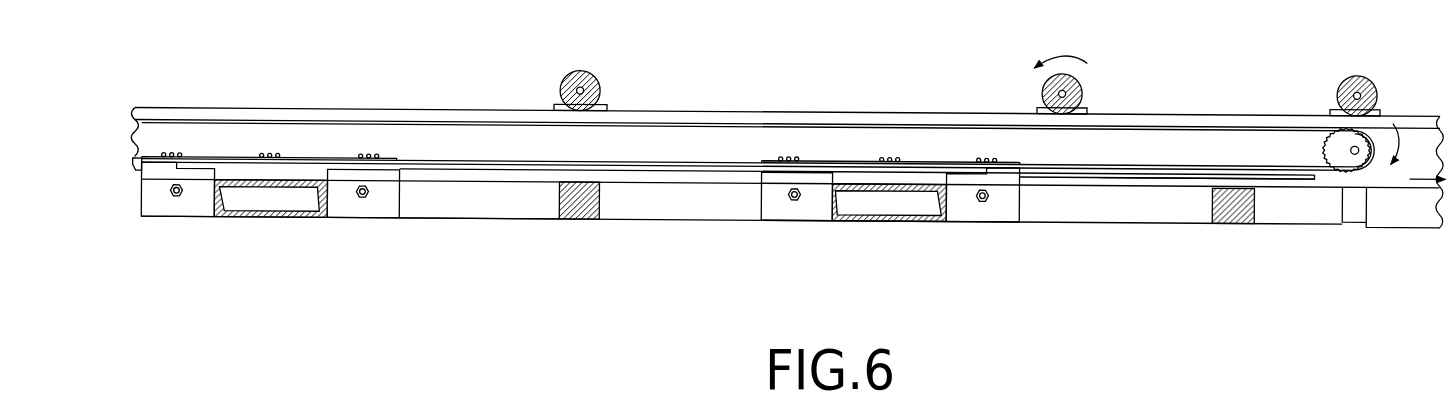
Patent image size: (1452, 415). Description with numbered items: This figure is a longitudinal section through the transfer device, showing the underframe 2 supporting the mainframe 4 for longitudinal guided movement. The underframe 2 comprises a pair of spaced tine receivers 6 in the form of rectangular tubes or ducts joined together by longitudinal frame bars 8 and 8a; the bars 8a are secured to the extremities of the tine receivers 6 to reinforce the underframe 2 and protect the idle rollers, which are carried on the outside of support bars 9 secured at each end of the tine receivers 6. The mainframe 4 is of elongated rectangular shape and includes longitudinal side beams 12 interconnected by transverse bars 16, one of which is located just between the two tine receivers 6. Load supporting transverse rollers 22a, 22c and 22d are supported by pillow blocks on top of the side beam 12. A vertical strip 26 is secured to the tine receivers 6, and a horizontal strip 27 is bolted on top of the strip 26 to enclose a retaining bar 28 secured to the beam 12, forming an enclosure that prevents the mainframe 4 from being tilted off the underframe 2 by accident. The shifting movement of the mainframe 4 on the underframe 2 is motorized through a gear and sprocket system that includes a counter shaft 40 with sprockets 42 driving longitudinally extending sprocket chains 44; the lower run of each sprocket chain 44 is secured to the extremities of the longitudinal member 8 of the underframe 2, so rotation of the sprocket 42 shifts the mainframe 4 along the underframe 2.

The underframe 2 is at (790, 248).
The mainframe 4 is at (406, 104).
The tine receiver 6 is at (320, 202).
The longitudinal frame bar 8 is at (662, 169).
The longitudinal frame bar 8a is at (457, 216).
The support bar 9 is at (808, 213).
The longitudinal side beam 12 is at (962, 107).
The transverse bar 16 is at (560, 200).
The load supporting transverse roller 22a is at (1373, 87).
The load supporting transverse roller 22c is at (1080, 91).
The load supporting transverse roller 22d is at (598, 82).
The vertical strip 26 is at (772, 174).
The horizontal strip 27 is at (850, 155).
The retaining bar 28 is at (1172, 170).
The counter shaft 40 is at (1347, 160).
The sprocket 42 is at (1337, 140).
The sprocket chain 44 is at (892, 120).